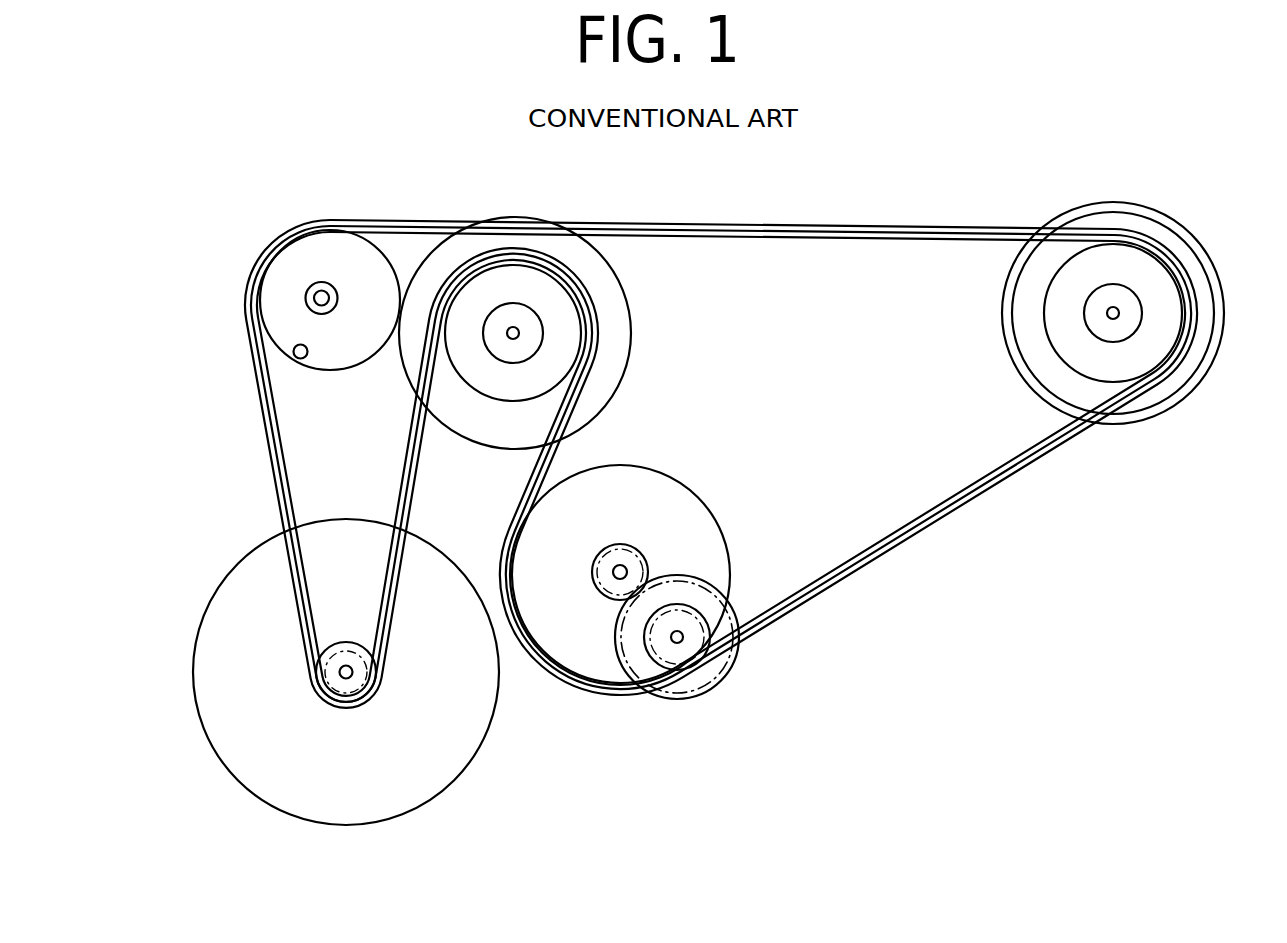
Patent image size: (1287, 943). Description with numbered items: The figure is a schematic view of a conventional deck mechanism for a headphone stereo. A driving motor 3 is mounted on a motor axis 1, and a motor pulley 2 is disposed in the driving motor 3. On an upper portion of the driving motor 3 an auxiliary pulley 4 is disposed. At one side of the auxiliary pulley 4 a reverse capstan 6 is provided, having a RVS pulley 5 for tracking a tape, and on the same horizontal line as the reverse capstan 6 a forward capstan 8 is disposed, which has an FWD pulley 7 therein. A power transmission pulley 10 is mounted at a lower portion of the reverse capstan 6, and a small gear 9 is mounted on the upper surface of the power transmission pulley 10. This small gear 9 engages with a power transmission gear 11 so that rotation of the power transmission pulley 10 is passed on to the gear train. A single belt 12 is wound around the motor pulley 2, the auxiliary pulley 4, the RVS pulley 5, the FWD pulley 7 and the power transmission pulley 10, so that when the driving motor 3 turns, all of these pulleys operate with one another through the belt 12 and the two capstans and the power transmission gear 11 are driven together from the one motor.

The motor axis 1 is at (345, 683).
The motor pulley 2 is at (325, 690).
The driving motor 3 is at (440, 790).
The auxiliary pulley 4 is at (322, 242).
The RVS pulley 5 is at (550, 287).
The reverse (RVS) capstan 6 is at (470, 240).
The FWD pulley 7 is at (1163, 313).
The forward (FWD) capstan 8 is at (1178, 240).
The small gear 9 is at (613, 582).
The power transmission pulley 10 is at (683, 490).
The power transmission gear 11 is at (665, 660).
The belt 12 is at (942, 515).